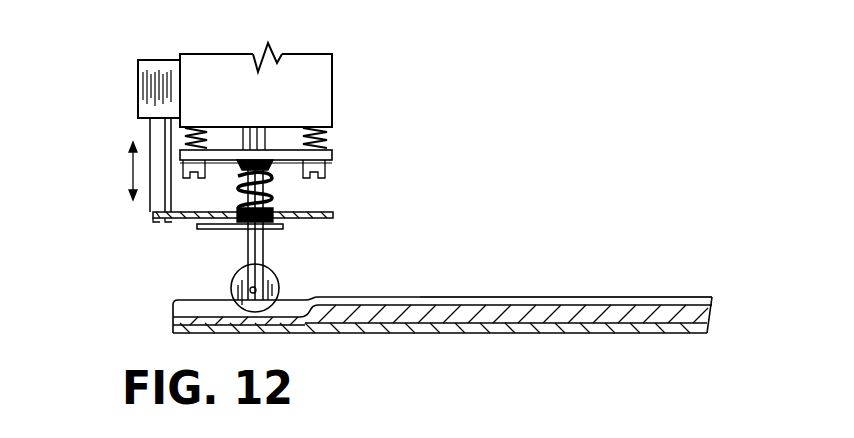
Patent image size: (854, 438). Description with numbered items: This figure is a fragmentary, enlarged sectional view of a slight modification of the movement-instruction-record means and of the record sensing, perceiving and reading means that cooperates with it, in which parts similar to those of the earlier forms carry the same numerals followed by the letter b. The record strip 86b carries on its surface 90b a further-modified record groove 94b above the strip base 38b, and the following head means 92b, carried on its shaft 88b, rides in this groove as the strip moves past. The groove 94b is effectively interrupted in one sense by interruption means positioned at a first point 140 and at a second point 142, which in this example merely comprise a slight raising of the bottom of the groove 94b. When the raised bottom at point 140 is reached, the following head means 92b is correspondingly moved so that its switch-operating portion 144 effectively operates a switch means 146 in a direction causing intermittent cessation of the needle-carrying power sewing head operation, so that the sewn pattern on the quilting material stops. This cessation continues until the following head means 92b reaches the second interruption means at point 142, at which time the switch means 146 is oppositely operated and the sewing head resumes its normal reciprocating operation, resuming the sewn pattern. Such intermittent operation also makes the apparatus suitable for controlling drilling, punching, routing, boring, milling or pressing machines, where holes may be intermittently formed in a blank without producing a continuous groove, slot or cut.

The record strip 86b is at (357, 100).
The switch means 146 is at (138, 107).
The switch-operating portion 144 is at (207, 229).
The following head means shaft 88b is at (265, 250).
The following head means 92b is at (278, 276).
The point of first interruption means 140 is at (305, 305).
The point of second interruption means 142 is at (577, 302).
The record strip surface 90b is at (662, 297).
The record groove 94b is at (632, 305).
The record strip base 38b is at (623, 333).